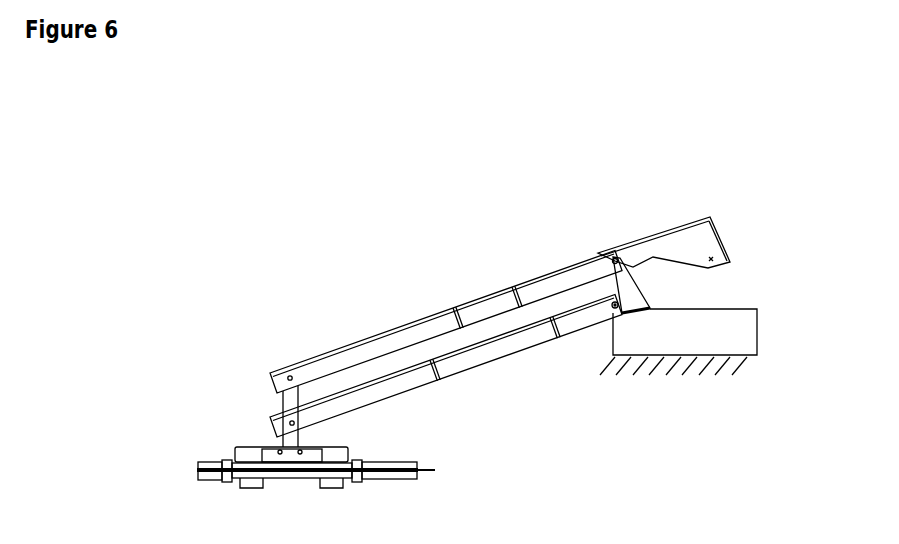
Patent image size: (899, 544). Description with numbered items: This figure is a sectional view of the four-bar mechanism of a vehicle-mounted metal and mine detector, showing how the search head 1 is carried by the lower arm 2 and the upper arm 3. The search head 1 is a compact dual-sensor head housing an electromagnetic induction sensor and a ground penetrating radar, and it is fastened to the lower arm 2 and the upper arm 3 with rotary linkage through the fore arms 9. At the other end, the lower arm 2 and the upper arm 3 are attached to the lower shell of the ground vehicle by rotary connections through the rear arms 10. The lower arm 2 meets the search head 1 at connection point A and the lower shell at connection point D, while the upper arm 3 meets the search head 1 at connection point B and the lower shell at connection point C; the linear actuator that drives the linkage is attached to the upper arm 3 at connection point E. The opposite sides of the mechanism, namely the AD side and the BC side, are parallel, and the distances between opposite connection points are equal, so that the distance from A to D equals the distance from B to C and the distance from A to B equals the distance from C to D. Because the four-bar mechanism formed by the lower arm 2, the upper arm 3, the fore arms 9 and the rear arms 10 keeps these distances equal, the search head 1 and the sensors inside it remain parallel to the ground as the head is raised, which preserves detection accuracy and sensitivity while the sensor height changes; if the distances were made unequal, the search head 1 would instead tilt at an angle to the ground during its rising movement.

The search head 1 is at (215, 460).
The lower arm 2 is at (528, 345).
The upper arm 3 is at (420, 319).
The fore arms 9 is at (283, 405).
The rear arms 10 is at (621, 313).
The connection point of lower arm to search head A is at (288, 421).
The connection point of upper arm to search head B is at (284, 375).
The connection point of upper arm to lower shell C is at (611, 297).
The connection point of lower arm to lower shell D is at (609, 303).
The connection point of linear actuator to upper arm E is at (716, 256).